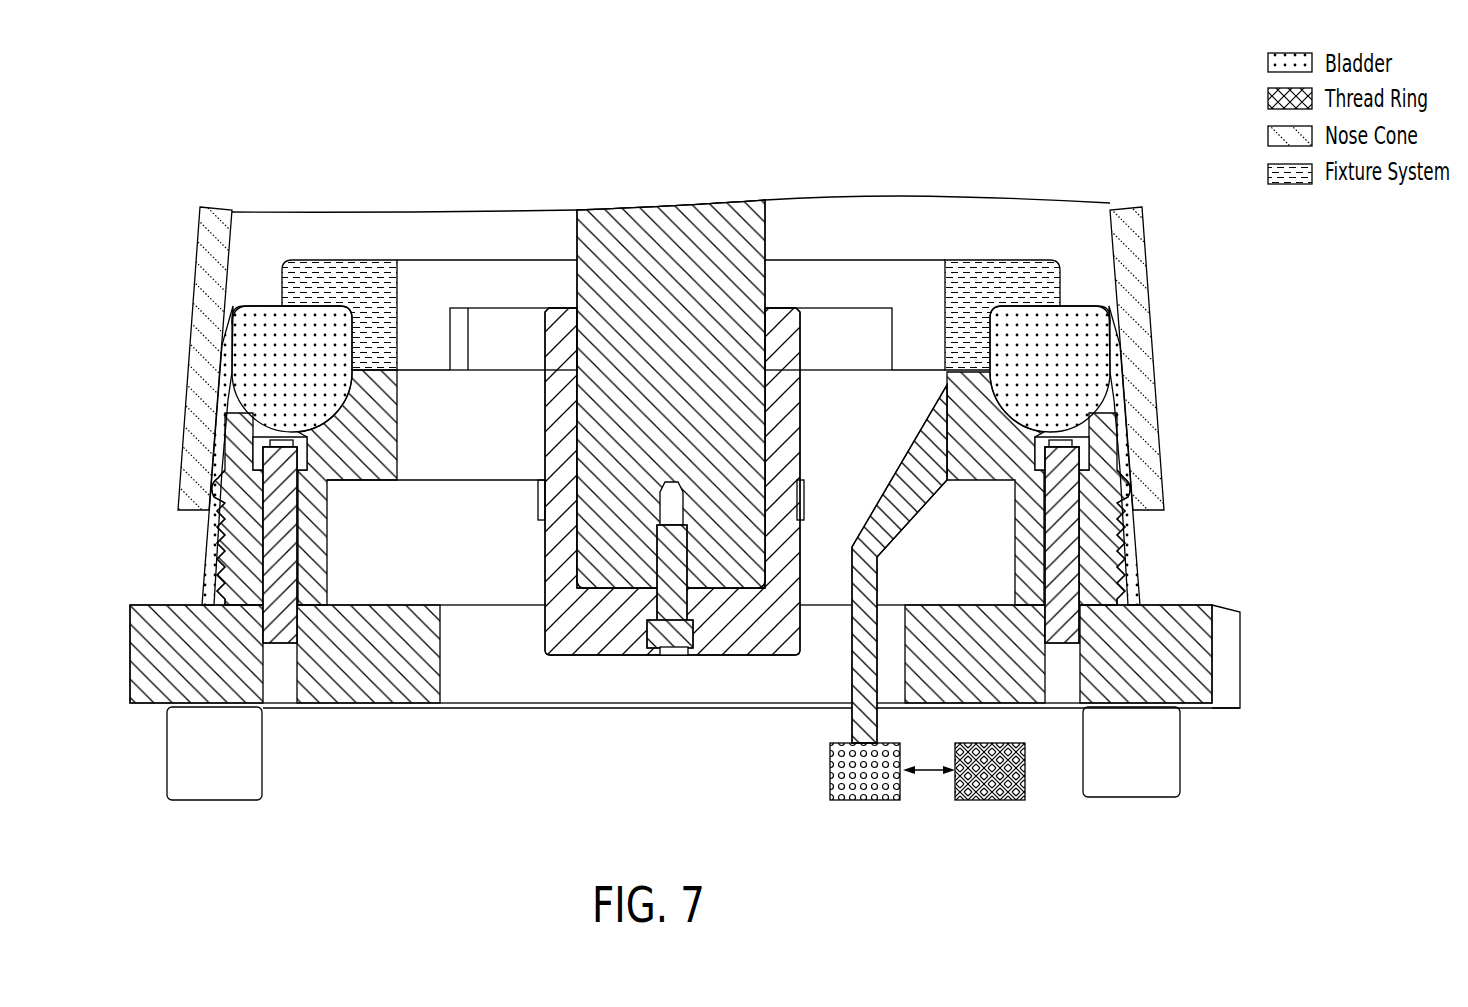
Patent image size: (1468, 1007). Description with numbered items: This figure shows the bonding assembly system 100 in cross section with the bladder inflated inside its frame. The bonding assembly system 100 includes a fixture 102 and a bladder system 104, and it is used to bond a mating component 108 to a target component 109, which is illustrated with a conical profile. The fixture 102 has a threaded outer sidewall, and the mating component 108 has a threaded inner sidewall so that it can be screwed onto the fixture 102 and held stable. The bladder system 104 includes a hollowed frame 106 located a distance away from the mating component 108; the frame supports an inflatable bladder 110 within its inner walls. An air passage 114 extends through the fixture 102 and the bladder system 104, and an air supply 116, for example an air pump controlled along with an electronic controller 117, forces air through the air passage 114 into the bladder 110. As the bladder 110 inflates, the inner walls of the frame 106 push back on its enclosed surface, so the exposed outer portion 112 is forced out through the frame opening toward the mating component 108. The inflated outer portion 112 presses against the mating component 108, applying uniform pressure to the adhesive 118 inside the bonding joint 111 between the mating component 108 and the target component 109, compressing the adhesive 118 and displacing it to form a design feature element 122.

The bonding assembly system 100 is at (662, 757).
The fixture 102 is at (140, 680).
The bladder system 104 is at (497, 252).
The hollowed frame 106 is at (372, 285).
The mating component 108 is at (183, 585).
The target component 109 is at (187, 217).
The inflatable bladder 110 is at (315, 330).
The bonding joint 111 is at (205, 522).
The exposed outer portion of the bladder 112 is at (240, 316).
The air passage 114 is at (852, 716).
The air supply 116 is at (830, 775).
The electronic controller 117 is at (1025, 775).
The adhesive 118 is at (198, 440).
The design feature element 122 is at (220, 353).